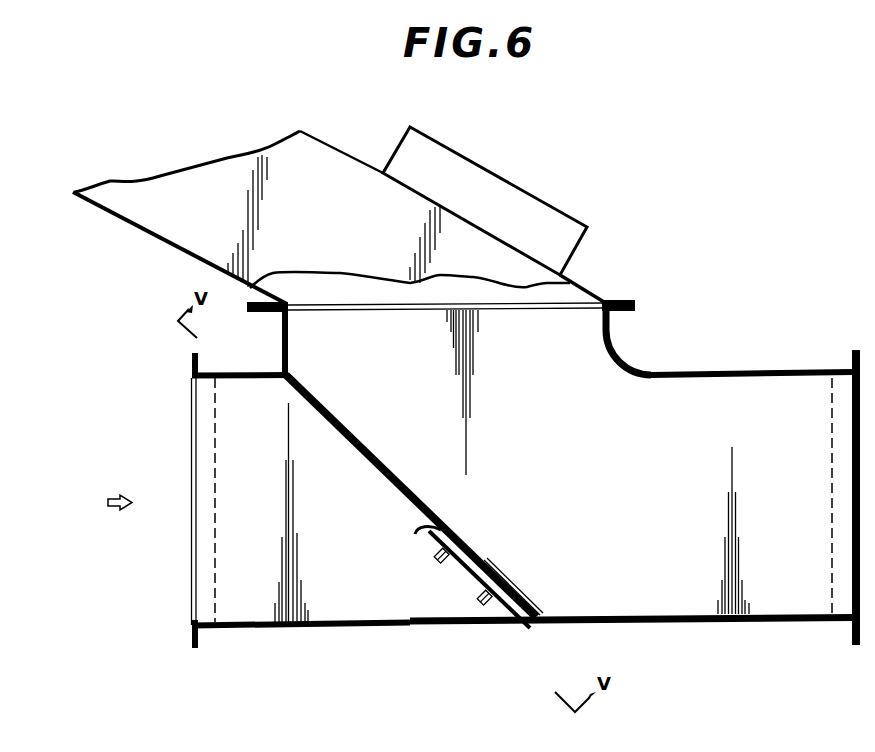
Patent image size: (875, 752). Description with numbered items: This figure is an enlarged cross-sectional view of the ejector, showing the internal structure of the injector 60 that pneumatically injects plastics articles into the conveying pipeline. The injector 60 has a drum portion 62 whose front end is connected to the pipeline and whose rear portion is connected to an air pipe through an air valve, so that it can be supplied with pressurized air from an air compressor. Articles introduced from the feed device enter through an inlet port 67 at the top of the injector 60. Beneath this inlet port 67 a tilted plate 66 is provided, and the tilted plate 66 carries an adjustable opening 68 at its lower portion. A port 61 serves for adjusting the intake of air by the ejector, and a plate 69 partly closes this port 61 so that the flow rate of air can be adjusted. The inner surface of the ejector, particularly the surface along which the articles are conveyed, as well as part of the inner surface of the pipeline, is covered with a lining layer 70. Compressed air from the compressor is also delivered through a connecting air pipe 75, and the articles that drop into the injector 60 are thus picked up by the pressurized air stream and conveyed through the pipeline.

The injector 60 is at (207, 580).
The port 61 is at (515, 207).
The drum portion 62 is at (752, 371).
The tilted plate 66 is at (367, 447).
The inlet port 67 is at (518, 306).
The adjustable opening 68 is at (520, 600).
The plate 69 is at (415, 533).
The lining layer 70 is at (752, 377).
The connecting air pipe 75 is at (115, 511).